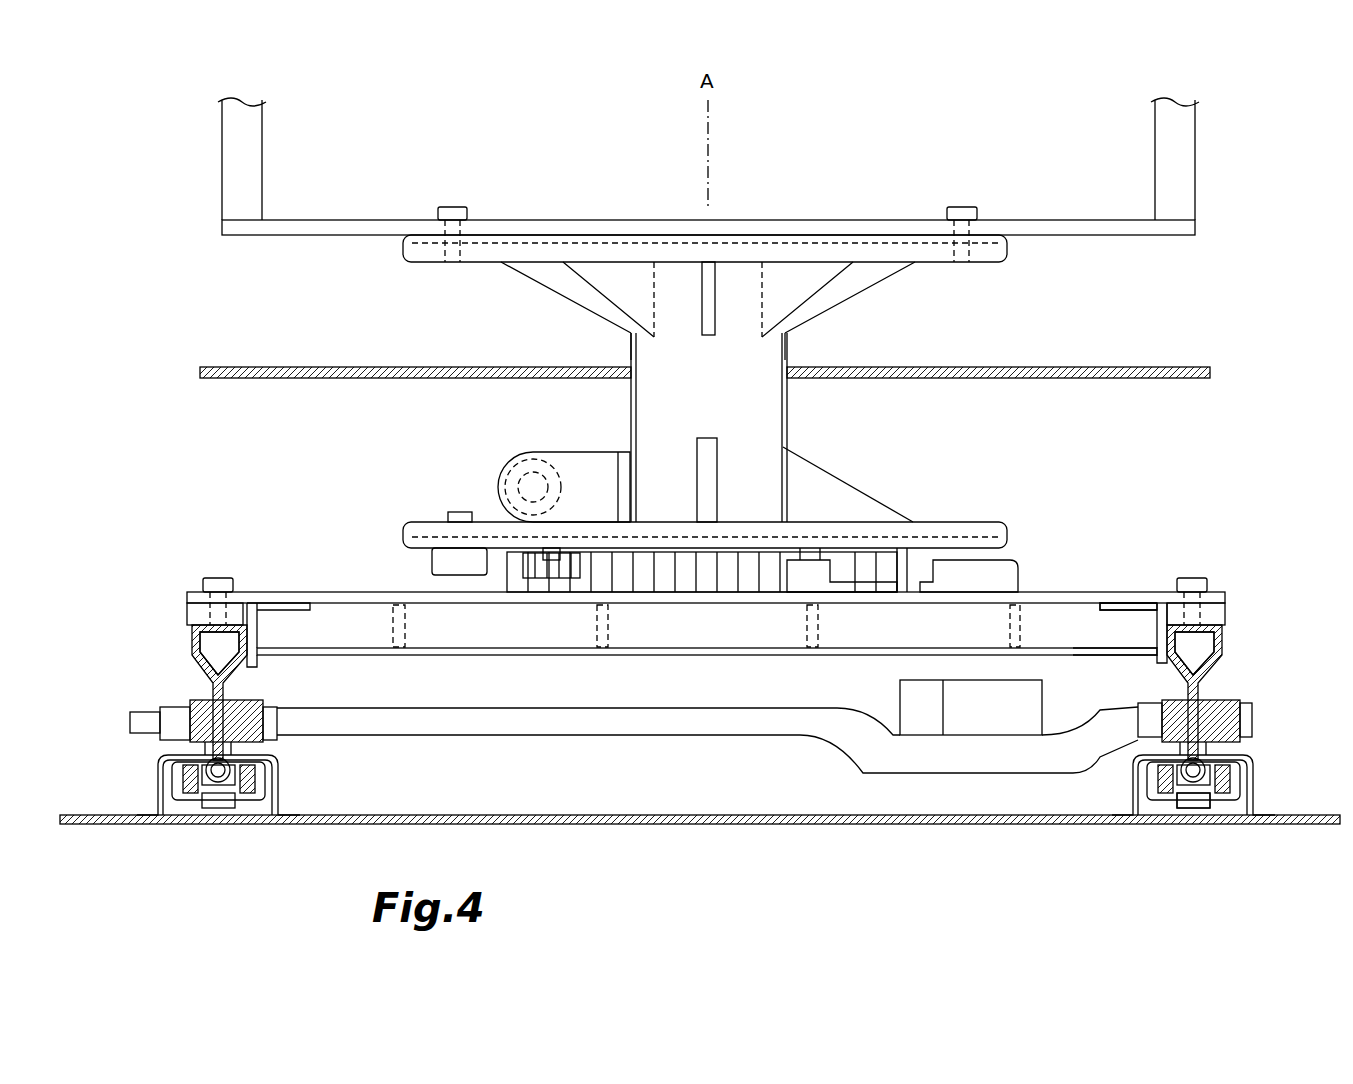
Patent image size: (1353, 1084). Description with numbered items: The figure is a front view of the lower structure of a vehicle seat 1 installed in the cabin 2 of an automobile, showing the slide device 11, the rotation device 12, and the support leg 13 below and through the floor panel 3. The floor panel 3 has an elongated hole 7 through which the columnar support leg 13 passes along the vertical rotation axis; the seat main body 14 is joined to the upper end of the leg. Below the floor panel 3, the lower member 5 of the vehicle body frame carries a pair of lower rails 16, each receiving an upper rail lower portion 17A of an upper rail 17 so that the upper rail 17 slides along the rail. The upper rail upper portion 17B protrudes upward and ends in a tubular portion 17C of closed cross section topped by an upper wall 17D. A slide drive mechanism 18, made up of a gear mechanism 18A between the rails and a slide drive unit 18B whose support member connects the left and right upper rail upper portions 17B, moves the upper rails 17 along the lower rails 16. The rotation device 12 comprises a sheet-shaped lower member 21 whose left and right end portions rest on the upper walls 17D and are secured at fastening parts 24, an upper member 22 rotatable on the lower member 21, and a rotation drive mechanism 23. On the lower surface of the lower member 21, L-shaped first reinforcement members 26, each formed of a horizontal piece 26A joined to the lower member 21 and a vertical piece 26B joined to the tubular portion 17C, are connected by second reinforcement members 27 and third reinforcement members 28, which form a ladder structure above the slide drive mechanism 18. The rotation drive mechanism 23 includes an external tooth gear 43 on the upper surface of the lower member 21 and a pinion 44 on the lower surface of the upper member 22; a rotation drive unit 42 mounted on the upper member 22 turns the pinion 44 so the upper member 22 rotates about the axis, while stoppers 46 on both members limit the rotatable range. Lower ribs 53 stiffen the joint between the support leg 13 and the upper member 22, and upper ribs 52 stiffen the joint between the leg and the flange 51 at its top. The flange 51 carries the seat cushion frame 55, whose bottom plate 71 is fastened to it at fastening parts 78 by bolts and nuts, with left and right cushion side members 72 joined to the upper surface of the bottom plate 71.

The vehicle seat 1 is at (155, 140).
The cabin 2 is at (158, 308).
The floor panel 3 is at (298, 367).
The lower member 5 is at (640, 826).
The elongated hole 7 is at (790, 378).
The slide device 11 is at (1250, 690).
The rotation device 12 is at (400, 490).
The support leg 13 is at (632, 405).
The seat main body 14 is at (1222, 125).
The lower rail 16 is at (262, 826).
The upper rail 17 is at (190, 673).
The upper rail lower portion 17A is at (178, 826).
The upper rail upper portion 17B is at (232, 716).
The tubular portion 17C is at (196, 650).
The upper wall 17D is at (200, 636).
The slide drive mechanism 18 is at (828, 765).
The gear mechanism 18A is at (1193, 790).
The slide drive unit 18B is at (963, 767).
The lower member 21 is at (1075, 592).
The upper member 22 is at (955, 535).
The rotation drive mechanism 23 is at (400, 556).
The fastening part 24 is at (218, 578).
The first reinforcement member 26 is at (305, 612).
The horizontal piece 26A is at (1130, 602).
The vertical piece 26B is at (1160, 656).
The second reinforcement member 27 is at (605, 640).
The third reinforcement member 28 is at (400, 622).
The rotation drive unit 42 is at (515, 455).
The external tooth gear 43 is at (710, 592).
The pinion 44 is at (545, 578).
The stopper 46 is at (444, 520).
The flange 51 is at (895, 255).
The upper rib 52 is at (690, 325).
The lower rib 53 is at (815, 490).
The seat cushion frame 55 is at (1215, 192).
The bottom plate 71 is at (1038, 218).
The cushion side member 72 is at (262, 162).
The fastening part 78 is at (452, 207).